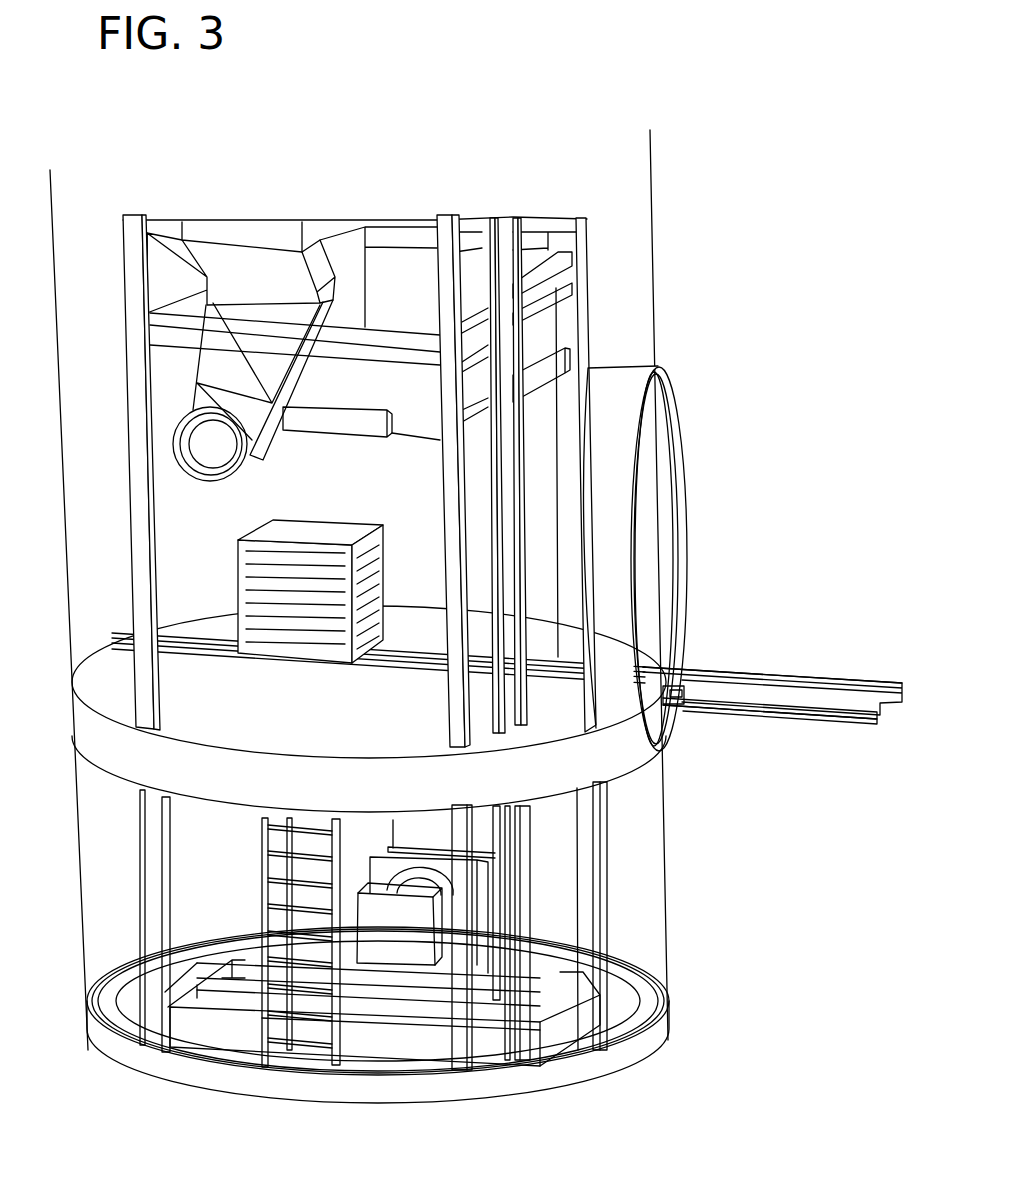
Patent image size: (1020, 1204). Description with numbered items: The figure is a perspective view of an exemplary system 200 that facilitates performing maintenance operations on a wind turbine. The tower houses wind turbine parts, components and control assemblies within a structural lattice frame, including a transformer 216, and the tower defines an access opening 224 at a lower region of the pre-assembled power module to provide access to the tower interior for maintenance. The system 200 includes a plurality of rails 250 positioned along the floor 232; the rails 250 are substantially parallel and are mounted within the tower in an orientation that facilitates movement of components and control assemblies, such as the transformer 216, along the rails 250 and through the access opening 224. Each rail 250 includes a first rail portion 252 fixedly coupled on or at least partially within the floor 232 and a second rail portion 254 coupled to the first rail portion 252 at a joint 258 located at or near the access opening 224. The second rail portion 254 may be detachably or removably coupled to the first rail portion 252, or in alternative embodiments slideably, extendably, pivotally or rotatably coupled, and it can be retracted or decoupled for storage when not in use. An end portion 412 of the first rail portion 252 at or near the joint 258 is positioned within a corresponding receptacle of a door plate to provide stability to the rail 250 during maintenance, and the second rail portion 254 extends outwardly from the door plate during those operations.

The system 200 is at (752, 440).
The transformer 216 is at (238, 576).
The access opening 224 is at (665, 538).
The floor 232 is at (103, 693).
The rail 250 is at (670, 657).
The first rail portion 252 is at (196, 650).
The second rail portion 254 is at (813, 678).
The joint 258 is at (686, 683).
The end portion 412 is at (680, 686).